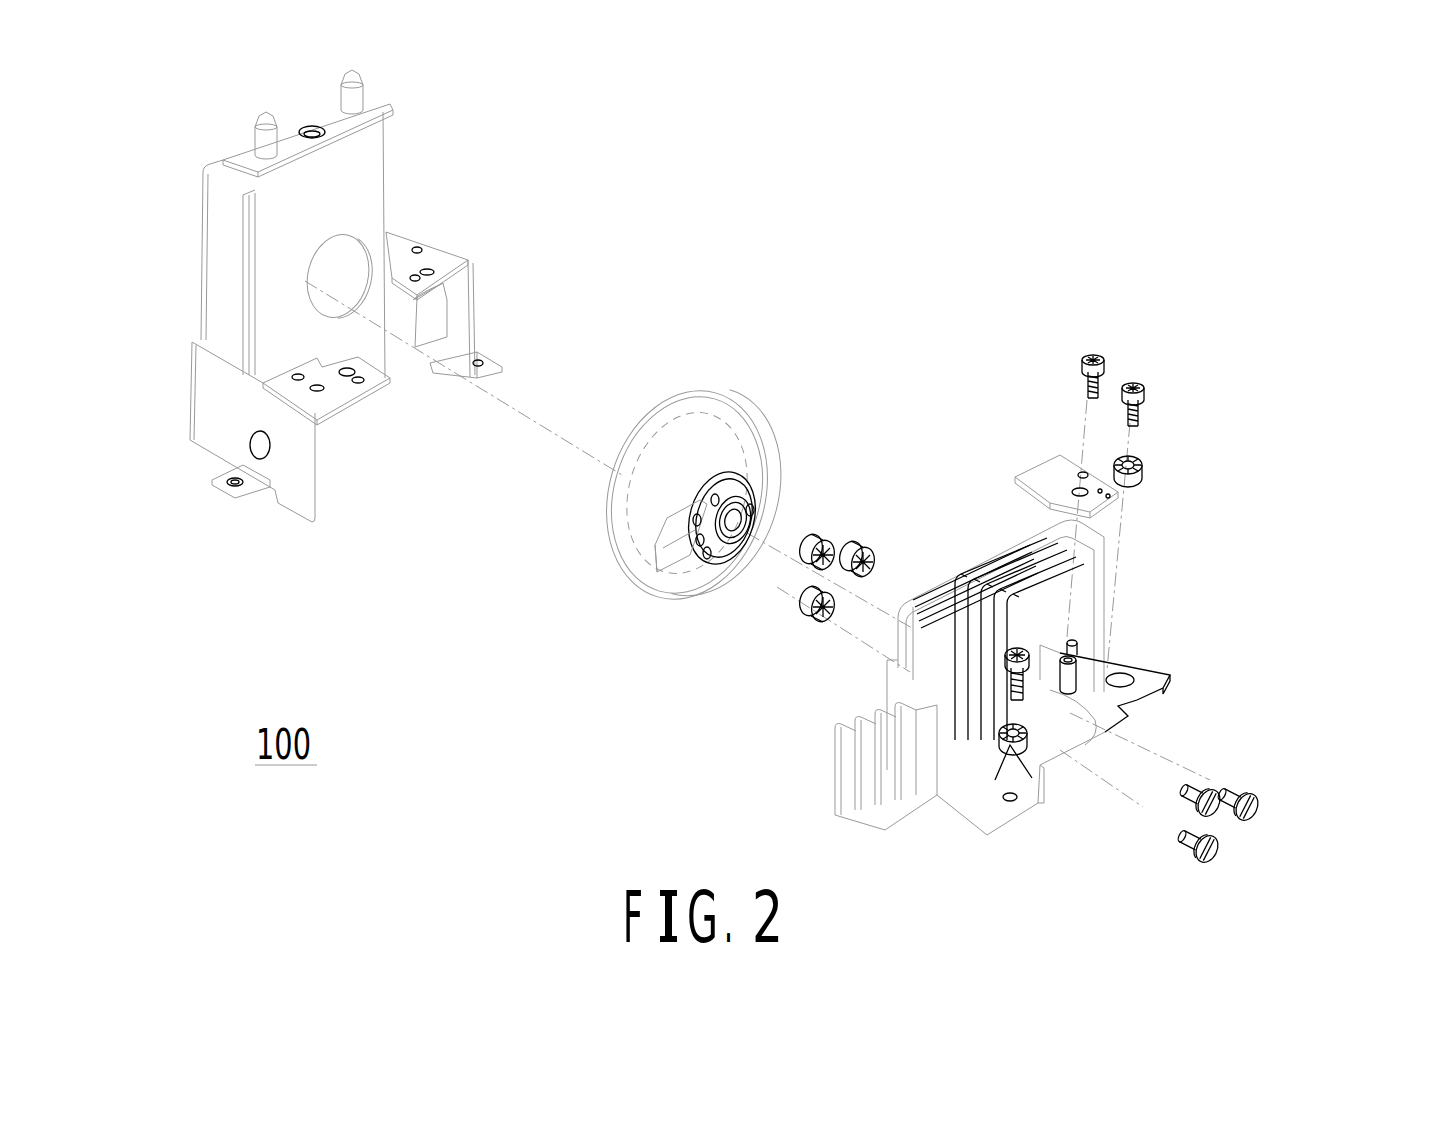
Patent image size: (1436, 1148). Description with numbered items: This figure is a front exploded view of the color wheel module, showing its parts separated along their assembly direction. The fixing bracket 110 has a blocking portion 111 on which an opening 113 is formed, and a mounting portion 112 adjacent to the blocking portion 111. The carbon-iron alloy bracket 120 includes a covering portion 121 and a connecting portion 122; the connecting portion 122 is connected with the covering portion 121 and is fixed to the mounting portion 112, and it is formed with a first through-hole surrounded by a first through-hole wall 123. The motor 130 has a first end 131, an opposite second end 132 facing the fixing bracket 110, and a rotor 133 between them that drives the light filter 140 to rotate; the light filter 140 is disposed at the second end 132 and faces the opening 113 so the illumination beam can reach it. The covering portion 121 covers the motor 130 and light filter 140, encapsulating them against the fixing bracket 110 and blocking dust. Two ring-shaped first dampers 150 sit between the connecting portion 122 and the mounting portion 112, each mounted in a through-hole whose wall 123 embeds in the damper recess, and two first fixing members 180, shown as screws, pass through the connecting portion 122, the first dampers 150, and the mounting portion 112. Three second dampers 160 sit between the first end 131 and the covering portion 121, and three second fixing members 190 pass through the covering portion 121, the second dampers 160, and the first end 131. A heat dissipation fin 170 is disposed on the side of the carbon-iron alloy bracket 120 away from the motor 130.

The fixing bracket 110 is at (243, 155).
The blocking portion 111 is at (365, 167).
The mounting portion 112 is at (455, 265).
The opening 113 is at (395, 230).
The carbon-iron alloy bracket 120 is at (1162, 705).
The covering portion 121 is at (1108, 648).
The connecting portion 122 is at (1153, 677).
The first through-hole wall 123 is at (1103, 660).
The motor 130 is at (858, 272).
The first end 131 is at (745, 483).
The second end 132 is at (703, 443).
The rotor 133 is at (745, 520).
The light filter 140 is at (620, 560).
The first damper 150 is at (1145, 468).
The second damper 160 is at (862, 545).
The heat dissipation fin 170 is at (1118, 545).
The first fixing member 180 is at (1005, 665).
The second fixing member 190 is at (1258, 815).